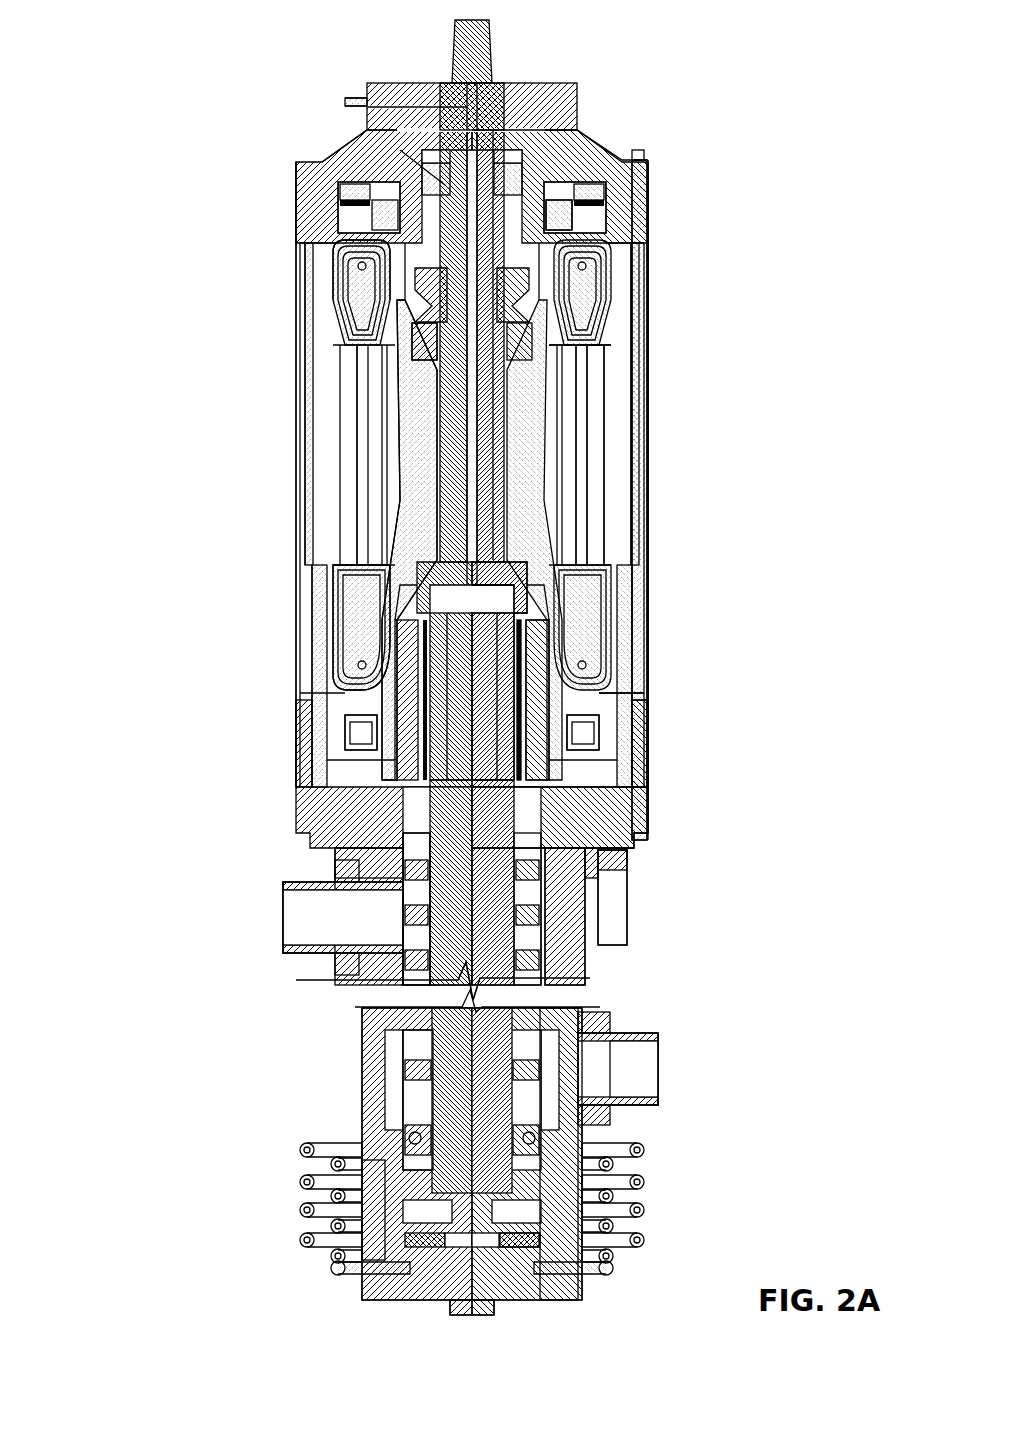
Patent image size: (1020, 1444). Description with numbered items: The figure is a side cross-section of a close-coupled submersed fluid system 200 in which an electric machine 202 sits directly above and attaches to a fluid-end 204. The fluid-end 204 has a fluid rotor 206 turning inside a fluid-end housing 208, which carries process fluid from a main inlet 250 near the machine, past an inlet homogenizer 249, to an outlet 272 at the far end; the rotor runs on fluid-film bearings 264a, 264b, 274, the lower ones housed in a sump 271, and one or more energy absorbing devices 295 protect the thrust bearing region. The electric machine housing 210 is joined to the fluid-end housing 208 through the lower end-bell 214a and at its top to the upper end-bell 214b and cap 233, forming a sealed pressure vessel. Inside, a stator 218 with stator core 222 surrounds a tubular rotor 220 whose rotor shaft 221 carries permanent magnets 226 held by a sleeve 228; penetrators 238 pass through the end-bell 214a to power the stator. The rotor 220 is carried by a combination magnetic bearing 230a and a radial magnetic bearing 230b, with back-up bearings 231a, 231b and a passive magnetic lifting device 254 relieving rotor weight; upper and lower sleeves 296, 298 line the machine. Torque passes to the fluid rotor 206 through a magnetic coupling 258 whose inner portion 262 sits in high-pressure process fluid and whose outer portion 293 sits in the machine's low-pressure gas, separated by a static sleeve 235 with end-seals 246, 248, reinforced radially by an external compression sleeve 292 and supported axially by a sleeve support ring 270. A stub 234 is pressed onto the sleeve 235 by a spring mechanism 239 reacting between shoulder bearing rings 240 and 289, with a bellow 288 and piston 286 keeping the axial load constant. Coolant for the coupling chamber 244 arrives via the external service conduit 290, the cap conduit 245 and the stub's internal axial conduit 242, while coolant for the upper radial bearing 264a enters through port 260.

The submersed fluid system 200 is at (237, 38).
The electric machine 202 is at (650, 290).
The fluid-end 204 is at (650, 960).
The fluid rotor 206 is at (458, 982).
The fluid-end housing 208 is at (583, 858).
The electric machine housing 210 is at (641, 350).
The lower end-bell 214a is at (620, 765).
The upper end-bell 214b is at (637, 172).
The electric machine stator 218 is at (618, 385).
The electric machine rotor 220 is at (520, 428).
The rotor shaft 221 is at (565, 335).
The stator core 222 is at (618, 440).
The permanent magnets 226 is at (598, 418).
The sleeve 228 is at (590, 470).
The combination magnetic bearing 230a is at (590, 715).
The radial magnetic bearing 230b is at (605, 218).
The back-up bearing 231a is at (592, 740).
The back-up bearing 231b is at (585, 187).
The cap 233 is at (562, 102).
The stub 234 is at (535, 190).
The sleeve 235 is at (520, 600).
The penetrators/connectors 238 is at (618, 895).
The spring mechanism 239 is at (400, 300).
The shoulder bearing ring 240 is at (430, 330).
The internal axial conduit 242 is at (493, 200).
The coupling chamber 244 is at (395, 785).
The conduit 245 is at (472, 147).
The end-seal 246 is at (525, 580).
The end-seal 248 is at (615, 800).
The inlet homogenizer 249 is at (395, 890).
The inlet 250 is at (315, 920).
The passive magnetic lifting device 254 is at (595, 188).
The magnetic coupling 258 is at (568, 700).
The port 260 is at (590, 824).
The inner portion of magnetic coupling 262 is at (540, 610).
The upper radial bearing 264a is at (442, 830).
The lower fluid-film bearing 264b is at (415, 1150).
The sleeve support ring 270 is at (348, 733).
The sump 271 is at (568, 1205).
The outlet 272 is at (640, 1075).
The bearing 274 is at (400, 1207).
The piston 286 is at (340, 190).
The bellow 288 is at (443, 183).
The shoulder bearing ring 289 is at (350, 262).
The external service conduit 290 is at (352, 98).
The external compression sleeve 292 is at (420, 713).
The outer portion of magnetic coupling 293 is at (540, 640).
The energy absorbing device 295 is at (450, 1312).
The upper sleeve 296 is at (315, 305).
The lower sleeve 298 is at (322, 652).